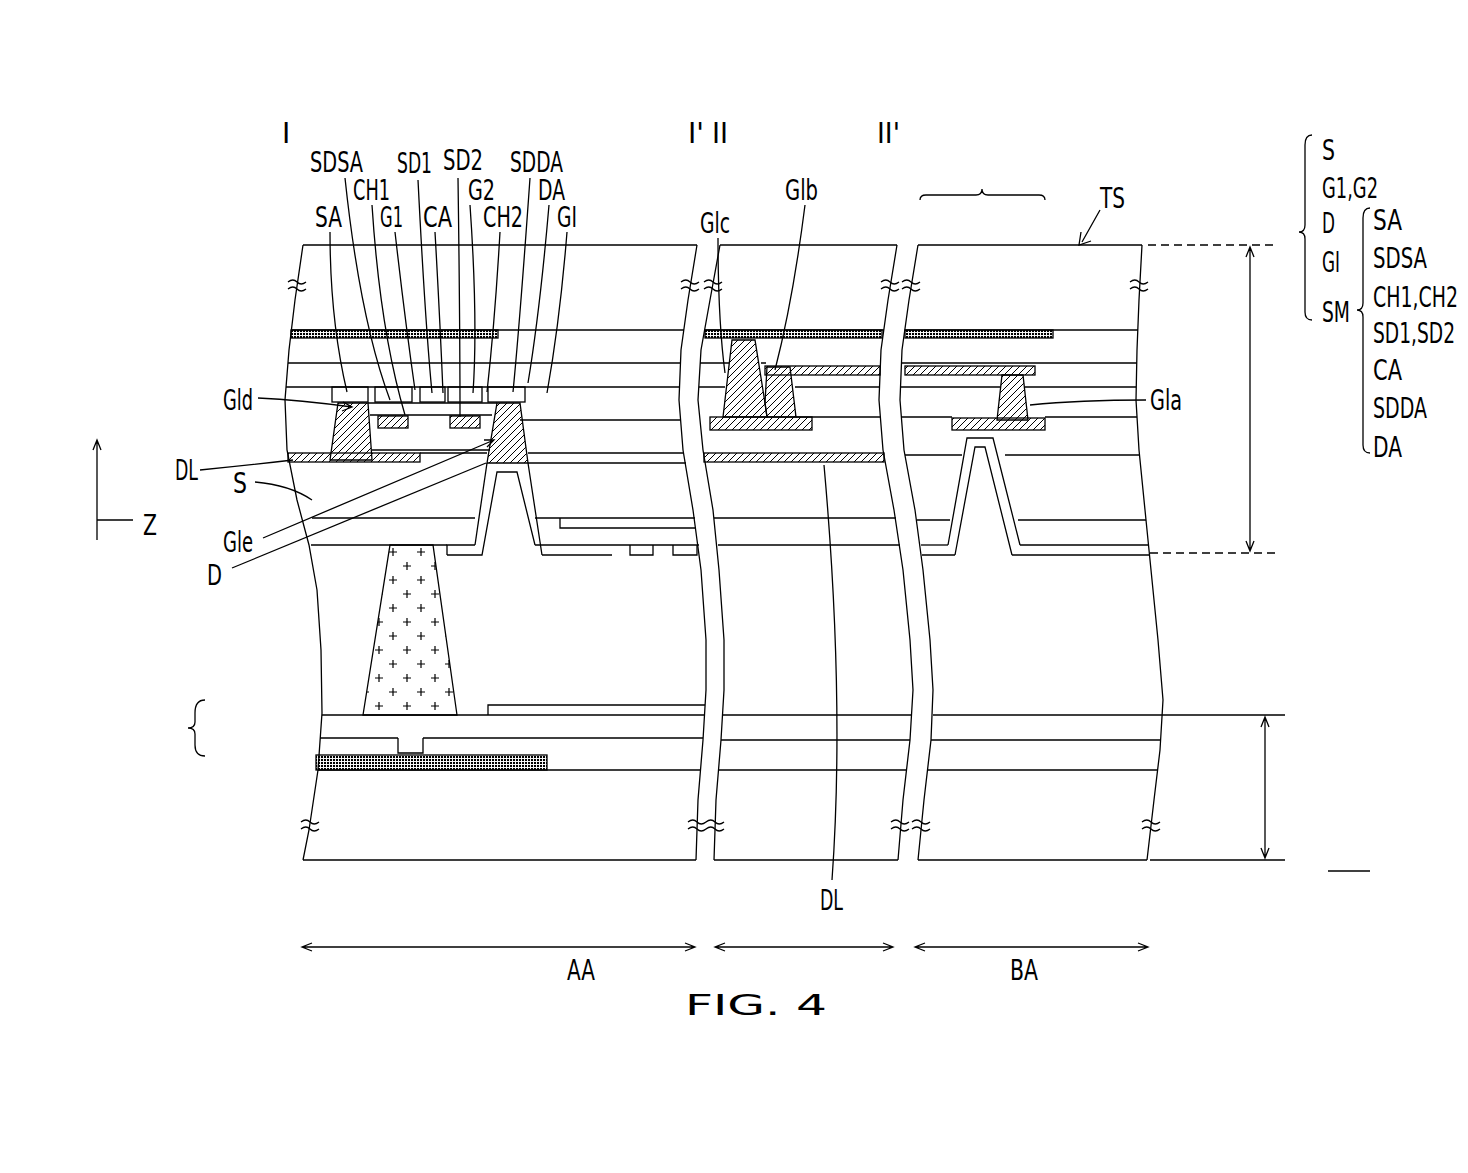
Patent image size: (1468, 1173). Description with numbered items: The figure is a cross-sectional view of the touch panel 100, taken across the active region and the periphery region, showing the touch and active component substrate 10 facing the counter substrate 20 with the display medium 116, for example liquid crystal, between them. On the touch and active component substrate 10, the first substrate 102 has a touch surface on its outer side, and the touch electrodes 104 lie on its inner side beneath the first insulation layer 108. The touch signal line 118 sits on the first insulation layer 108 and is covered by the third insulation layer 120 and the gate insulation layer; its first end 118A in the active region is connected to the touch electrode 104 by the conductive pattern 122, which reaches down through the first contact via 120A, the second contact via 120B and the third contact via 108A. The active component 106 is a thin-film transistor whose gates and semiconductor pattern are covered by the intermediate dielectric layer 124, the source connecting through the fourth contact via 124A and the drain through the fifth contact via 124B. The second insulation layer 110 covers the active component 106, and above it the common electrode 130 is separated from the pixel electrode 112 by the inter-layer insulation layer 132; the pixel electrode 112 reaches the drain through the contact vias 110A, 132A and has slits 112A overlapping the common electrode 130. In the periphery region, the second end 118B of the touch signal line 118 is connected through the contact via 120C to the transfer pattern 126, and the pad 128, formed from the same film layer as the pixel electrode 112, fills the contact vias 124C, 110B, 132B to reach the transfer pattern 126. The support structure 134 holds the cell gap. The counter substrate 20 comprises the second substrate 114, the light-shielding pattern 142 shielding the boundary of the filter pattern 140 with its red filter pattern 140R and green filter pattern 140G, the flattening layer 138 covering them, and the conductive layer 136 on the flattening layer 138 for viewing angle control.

The touch panel 100 is at (1349, 855).
The touch and active component substrate 10 is at (1214, 399).
The counter substrate 20 is at (1232, 787).
The first substrate 102 is at (308, 263).
The touch electrode 104 is at (298, 325).
The active component 106 is at (1287, 227).
The first insulation layer 108 is at (290, 352).
The third contact via 108A is at (740, 370).
The second insulation layer 110 is at (312, 500).
The contact via 110A is at (498, 478).
The contact via 110B is at (974, 482).
The pixel electrode 112 is at (548, 556).
The slit 112A is at (621, 556).
The second substrate 114 is at (1150, 780).
The display medium 116 is at (1163, 660).
The touch signal line 118 is at (982, 179).
The first end 118A is at (795, 345).
The second end 118B is at (1023, 330).
The third insulation layer 120 is at (290, 372).
The first contact via 120A is at (780, 368).
The second contact via 120B is at (735, 342).
The contact via 120C is at (1027, 377).
The conductive pattern 122 is at (760, 465).
The intermediate dielectric layer 124 is at (298, 428).
The fourth contact via 124A is at (352, 439).
The fifth contact via 124B is at (493, 468).
The contact via 124C is at (978, 451).
The transfer pattern 126 is at (1045, 424).
The pad 128 is at (1135, 552).
The common electrode 130 is at (567, 522).
The inter-layer insulation layer 132 is at (1135, 531).
The contact via 132A is at (483, 545).
The contact via 132B is at (960, 541).
The support structure 134 is at (380, 648).
The conductive layer 136 is at (492, 509).
The flattening layer 138 is at (1150, 737).
The filter pattern 140 is at (170, 728).
The green filter pattern 140G is at (447, 747).
The red filter pattern 140R is at (325, 747).
The light-shielding pattern 142 is at (317, 760).